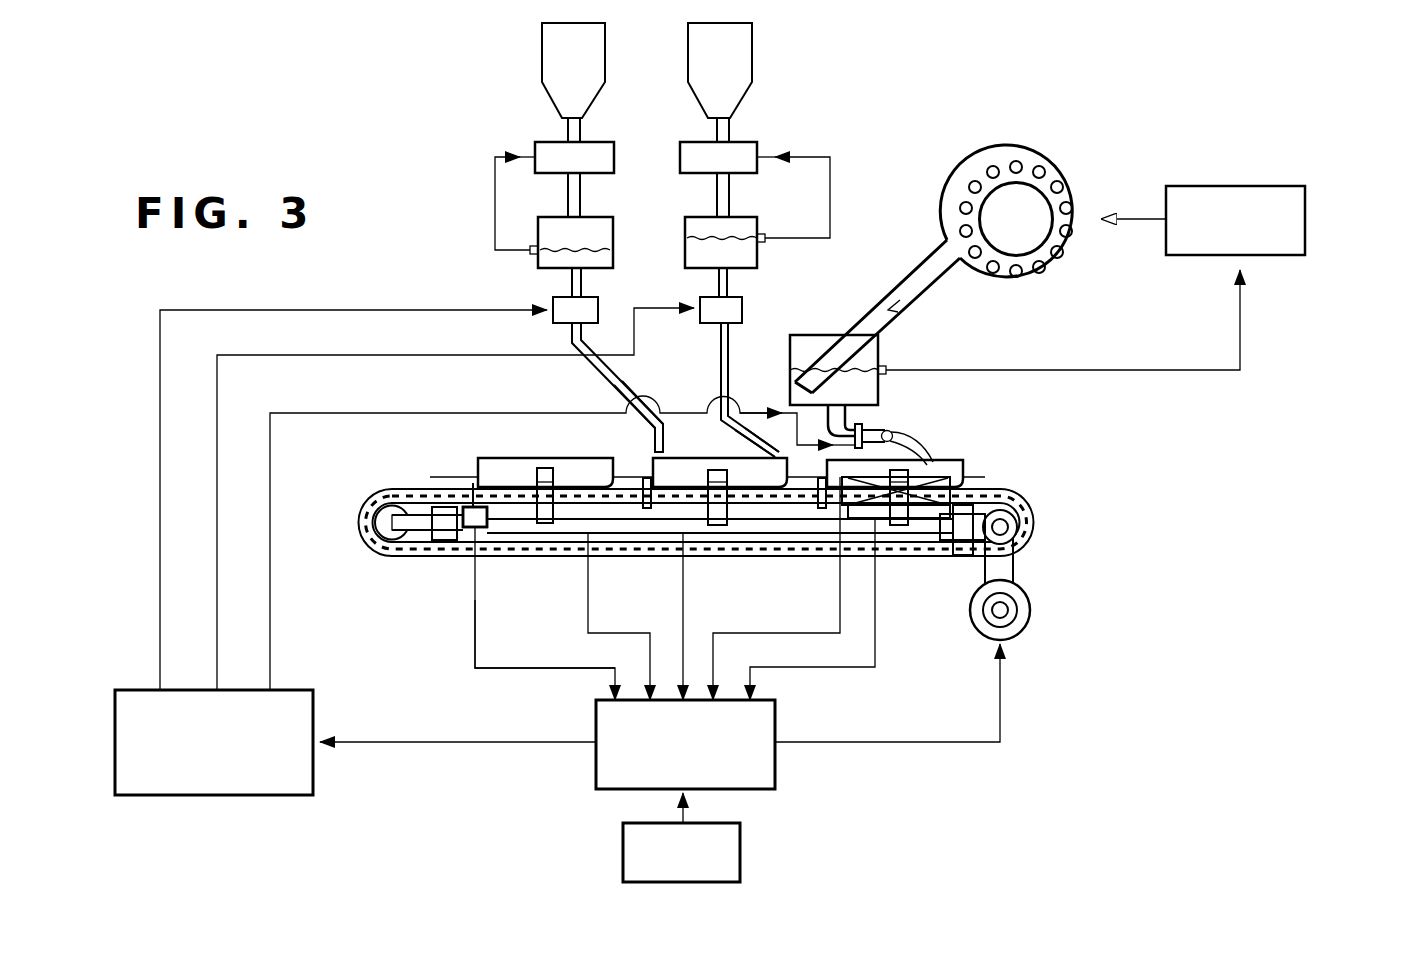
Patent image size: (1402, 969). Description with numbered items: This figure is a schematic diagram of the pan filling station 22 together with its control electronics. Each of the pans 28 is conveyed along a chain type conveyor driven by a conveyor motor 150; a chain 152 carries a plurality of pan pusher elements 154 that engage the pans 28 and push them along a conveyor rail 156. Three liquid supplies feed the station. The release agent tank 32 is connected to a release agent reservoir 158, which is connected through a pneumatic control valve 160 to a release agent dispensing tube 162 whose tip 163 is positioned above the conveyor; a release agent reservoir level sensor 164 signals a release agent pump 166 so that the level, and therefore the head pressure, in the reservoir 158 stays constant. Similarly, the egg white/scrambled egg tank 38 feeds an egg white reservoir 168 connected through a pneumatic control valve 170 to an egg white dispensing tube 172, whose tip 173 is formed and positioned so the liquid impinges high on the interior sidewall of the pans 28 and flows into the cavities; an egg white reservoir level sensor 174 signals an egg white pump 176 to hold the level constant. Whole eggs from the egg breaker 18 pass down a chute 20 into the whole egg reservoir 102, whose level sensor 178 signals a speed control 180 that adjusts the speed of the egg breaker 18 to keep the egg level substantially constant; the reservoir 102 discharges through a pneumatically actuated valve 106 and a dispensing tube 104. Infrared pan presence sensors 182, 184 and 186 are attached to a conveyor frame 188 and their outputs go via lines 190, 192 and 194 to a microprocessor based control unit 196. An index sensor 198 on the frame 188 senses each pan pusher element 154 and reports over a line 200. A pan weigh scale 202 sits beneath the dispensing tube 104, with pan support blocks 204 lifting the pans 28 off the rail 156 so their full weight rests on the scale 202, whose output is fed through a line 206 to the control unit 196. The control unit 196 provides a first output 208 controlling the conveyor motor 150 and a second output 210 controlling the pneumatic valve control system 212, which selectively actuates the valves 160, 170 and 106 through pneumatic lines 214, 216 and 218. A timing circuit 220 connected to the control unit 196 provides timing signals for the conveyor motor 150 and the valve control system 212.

The egg breaker 18 is at (1078, 168).
The whole egg chute 20 is at (958, 311).
The pan filling station 22 is at (1182, 52).
The pan 28 is at (653, 472).
The release agent tank 32 is at (562, 58).
The egg white/scrambled egg tank 38 is at (740, 62).
The whole egg reservoir 102 is at (818, 348).
The dispensing tube 104 is at (880, 432).
The pneumatically actuated valve 106 is at (866, 426).
The conveyor motor 150 is at (1032, 616).
The chain 152 is at (376, 500).
The pan pusher element 154 is at (470, 482).
The conveyor rail 156 is at (465, 508).
The release agent reservoir 158 is at (593, 228).
The pneumatic control valve 160 is at (588, 310).
The release agent dispensing tube 162 is at (628, 398).
The tip 163 is at (618, 405).
The release agent reservoir level sensor 164 is at (534, 250).
The release agent pump 166 is at (550, 141).
The egg white reservoir 168 is at (698, 225).
The pneumatic control valve 170 is at (728, 313).
The egg white dispensing tube 172 is at (728, 375).
The tip 173 is at (755, 435).
The egg white reservoir level sensor 174 is at (767, 235).
The egg white pump 176 is at (743, 141).
The level sensor 178 is at (888, 364).
The speed control 180 is at (1305, 200).
The infrared pan presence sensor 182 is at (545, 468).
The infrared pan presence sensor 184 is at (720, 470).
The infrared pan presence sensor 186 is at (910, 478).
The conveyor frame 188 is at (643, 523).
The line 190 is at (558, 633).
The line 192 is at (834, 551).
The line 194 is at (838, 608).
The control unit 196 is at (760, 768).
The index sensor 198 is at (493, 528).
The line 200 is at (470, 617).
The pan weigh scale 202 is at (917, 512).
The pan support block 204 is at (955, 505).
The line 206 is at (878, 640).
The first output 208 is at (905, 744).
The second output 210 is at (505, 743).
The pneumatic valve control system 212 is at (205, 797).
The pneumatic line 214 is at (160, 526).
The pneumatic line 216 is at (217, 480).
The pneumatic line 218 is at (270, 437).
The timing circuit 220 is at (740, 862).